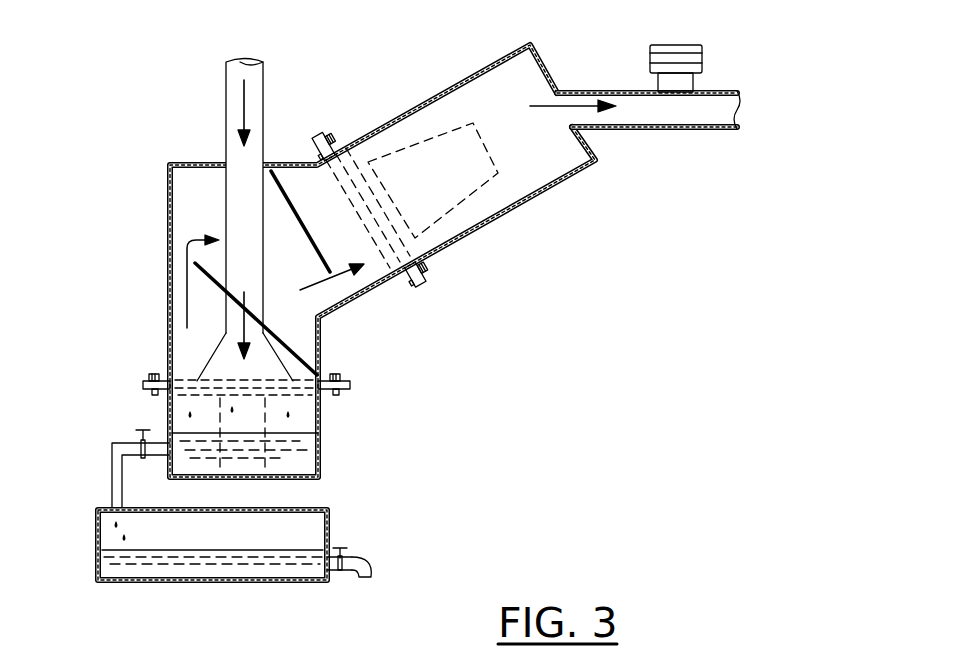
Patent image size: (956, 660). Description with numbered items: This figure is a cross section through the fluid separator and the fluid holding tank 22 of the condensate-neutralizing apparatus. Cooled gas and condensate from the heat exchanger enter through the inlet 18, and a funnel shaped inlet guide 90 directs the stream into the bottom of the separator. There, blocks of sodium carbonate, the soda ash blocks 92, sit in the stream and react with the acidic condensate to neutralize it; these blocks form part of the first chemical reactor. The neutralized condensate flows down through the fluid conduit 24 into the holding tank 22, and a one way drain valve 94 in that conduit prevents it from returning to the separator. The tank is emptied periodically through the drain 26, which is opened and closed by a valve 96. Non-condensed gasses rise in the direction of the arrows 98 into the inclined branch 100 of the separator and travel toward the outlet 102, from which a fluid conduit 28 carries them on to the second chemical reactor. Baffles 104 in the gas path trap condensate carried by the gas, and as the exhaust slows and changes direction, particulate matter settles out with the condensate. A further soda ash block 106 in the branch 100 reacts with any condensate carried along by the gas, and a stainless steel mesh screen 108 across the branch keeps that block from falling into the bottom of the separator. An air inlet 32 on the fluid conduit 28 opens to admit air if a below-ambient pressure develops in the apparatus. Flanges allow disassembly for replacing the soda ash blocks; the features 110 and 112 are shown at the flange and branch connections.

The inlet 18 is at (237, 150).
The holding tank 22 is at (175, 585).
The fluid conduit 24 is at (112, 475).
The drain 26 is at (380, 570).
The fluid conduit 28 is at (681, 108).
The air inlet 32 is at (702, 52).
The funnel shaped inlet guide 90 is at (213, 355).
The soda ash blocks 92 is at (253, 453).
The one way drain valve 94 is at (140, 427).
The valve 96 is at (345, 548).
The arrows 98 is at (187, 270).
The branch 100 is at (470, 240).
The outlet 102 is at (577, 110).
The baffles 104 is at (302, 226).
The soda ash block 106 is at (468, 182).
The stainless steel mesh screen 108 is at (318, 171).
The flange 110 is at (350, 384).
The fastener bolt 112 is at (418, 292).